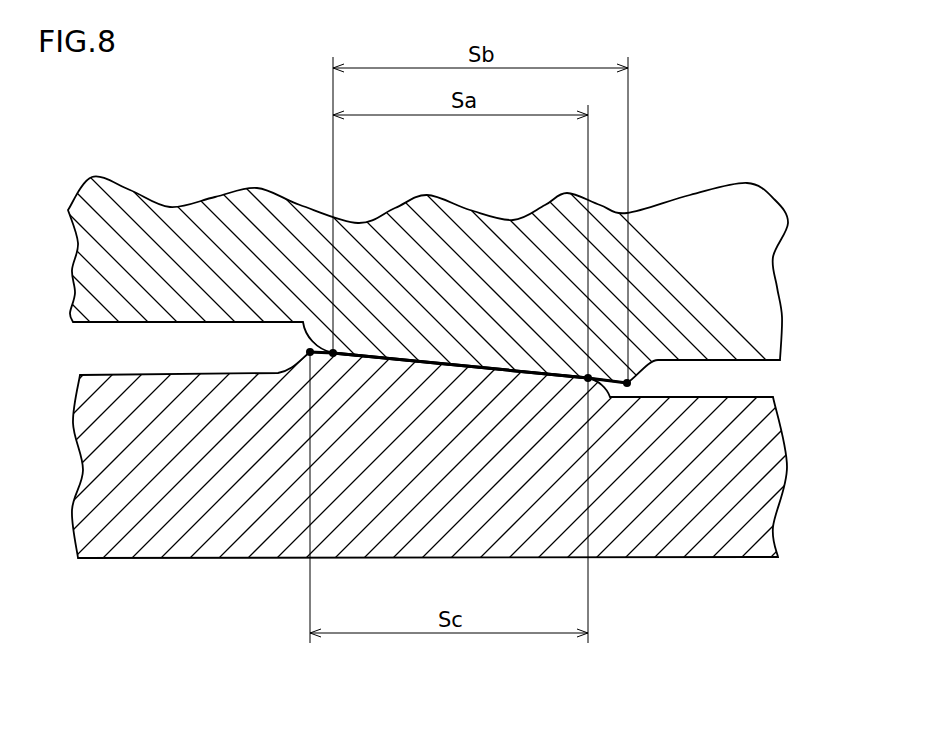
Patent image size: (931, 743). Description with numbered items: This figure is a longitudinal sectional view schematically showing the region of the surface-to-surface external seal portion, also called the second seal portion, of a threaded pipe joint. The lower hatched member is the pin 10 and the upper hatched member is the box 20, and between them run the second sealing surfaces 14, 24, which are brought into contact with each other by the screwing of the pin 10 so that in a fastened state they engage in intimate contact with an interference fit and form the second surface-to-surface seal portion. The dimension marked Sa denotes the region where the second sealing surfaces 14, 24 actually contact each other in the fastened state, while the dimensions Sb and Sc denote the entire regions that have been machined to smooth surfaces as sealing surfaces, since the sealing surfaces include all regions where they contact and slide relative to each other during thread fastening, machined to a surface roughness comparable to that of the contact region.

The pin 10 is at (152, 589).
The box 20 is at (689, 167).
The second sealing surface 14 is at (426, 363).
The second sealing surface 24 is at (472, 367).